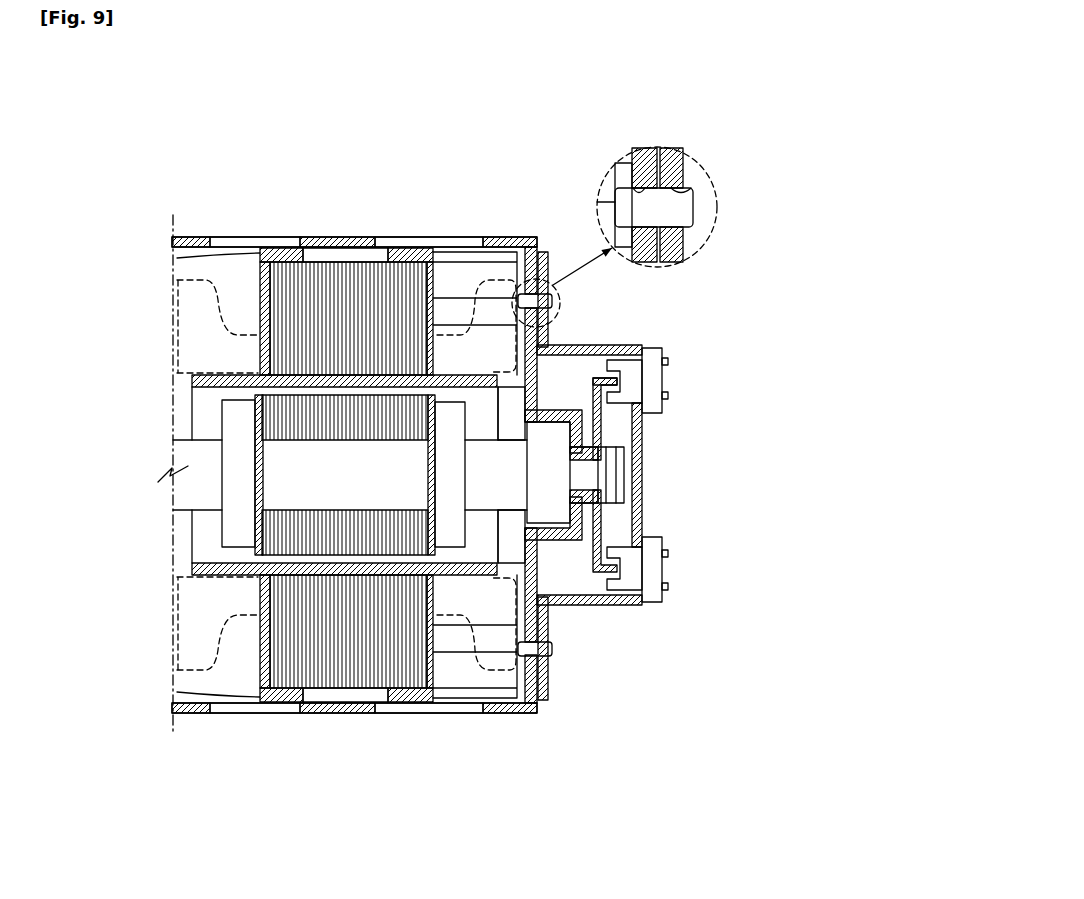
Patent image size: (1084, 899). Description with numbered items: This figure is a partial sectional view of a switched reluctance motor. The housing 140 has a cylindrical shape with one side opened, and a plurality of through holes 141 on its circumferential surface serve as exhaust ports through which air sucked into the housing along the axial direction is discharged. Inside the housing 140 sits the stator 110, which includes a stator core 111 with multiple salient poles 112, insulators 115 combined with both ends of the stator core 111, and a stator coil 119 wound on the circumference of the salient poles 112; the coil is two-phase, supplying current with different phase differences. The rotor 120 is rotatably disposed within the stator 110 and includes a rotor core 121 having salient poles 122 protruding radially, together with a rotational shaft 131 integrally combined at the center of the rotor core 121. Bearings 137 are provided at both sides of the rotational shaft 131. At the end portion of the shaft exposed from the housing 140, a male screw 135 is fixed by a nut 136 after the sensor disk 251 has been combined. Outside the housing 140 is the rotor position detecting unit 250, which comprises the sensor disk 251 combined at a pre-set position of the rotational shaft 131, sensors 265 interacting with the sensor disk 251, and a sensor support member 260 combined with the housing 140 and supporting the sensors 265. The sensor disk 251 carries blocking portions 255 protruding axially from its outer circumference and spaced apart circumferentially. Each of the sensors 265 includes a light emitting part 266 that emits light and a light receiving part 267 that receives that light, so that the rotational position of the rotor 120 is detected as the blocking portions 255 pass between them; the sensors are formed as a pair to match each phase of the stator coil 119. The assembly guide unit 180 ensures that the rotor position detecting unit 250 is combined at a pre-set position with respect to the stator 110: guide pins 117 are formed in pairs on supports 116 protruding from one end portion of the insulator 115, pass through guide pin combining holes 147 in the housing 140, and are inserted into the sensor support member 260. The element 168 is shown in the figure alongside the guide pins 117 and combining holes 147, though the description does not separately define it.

The stator 110 is at (282, 474).
The stator core 111 is at (287, 300).
The salient poles 112 is at (278, 598).
The insulator 115 is at (258, 257).
The stator coil 119 is at (100, 246).
The rotor 120 is at (323, 475).
The rotor core 121 is at (270, 420).
The salient poles 122 is at (263, 552).
The rotational shaft 131 is at (185, 452).
The male screw 135 is at (627, 482).
The nut 136 is at (625, 450).
The bearings 137 is at (548, 512).
The housing 140 is at (522, 238).
The through holes 141 is at (480, 237).
The supports 116 is at (607, 183).
The guide pin combining holes 147 is at (630, 187).
The grommet 168 is at (603, 95).
The guide pins 117 is at (713, 188).
The assembly guide unit 180 is at (636, 438).
The rotor position detecting unit 250 is at (632, 627).
The sensor disk 251 is at (607, 420).
The blocking portions 255 is at (600, 377).
The sensor support member 260 is at (642, 501).
The sensors 265 is at (704, 454).
The light emitting parts 266 is at (612, 362).
The light receiving parts 267 is at (608, 395).